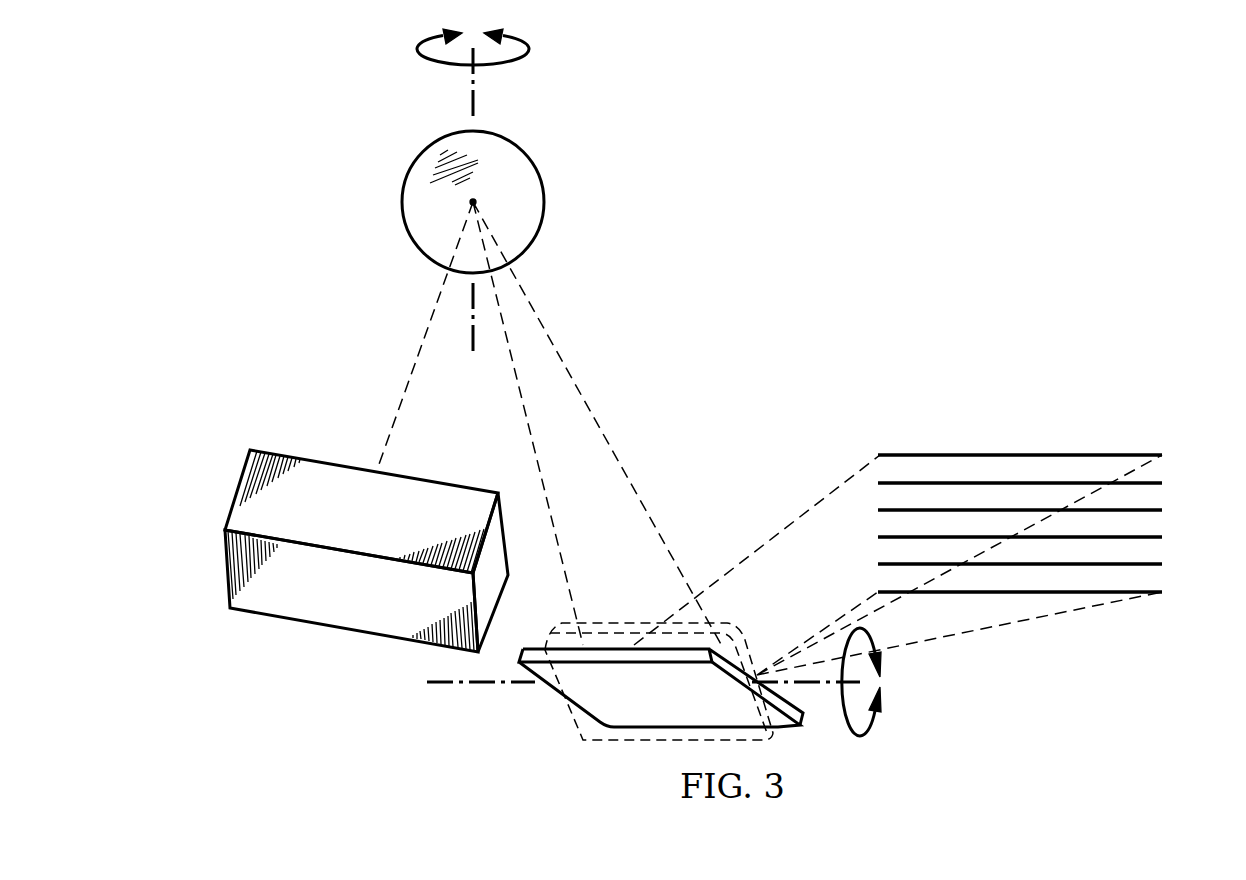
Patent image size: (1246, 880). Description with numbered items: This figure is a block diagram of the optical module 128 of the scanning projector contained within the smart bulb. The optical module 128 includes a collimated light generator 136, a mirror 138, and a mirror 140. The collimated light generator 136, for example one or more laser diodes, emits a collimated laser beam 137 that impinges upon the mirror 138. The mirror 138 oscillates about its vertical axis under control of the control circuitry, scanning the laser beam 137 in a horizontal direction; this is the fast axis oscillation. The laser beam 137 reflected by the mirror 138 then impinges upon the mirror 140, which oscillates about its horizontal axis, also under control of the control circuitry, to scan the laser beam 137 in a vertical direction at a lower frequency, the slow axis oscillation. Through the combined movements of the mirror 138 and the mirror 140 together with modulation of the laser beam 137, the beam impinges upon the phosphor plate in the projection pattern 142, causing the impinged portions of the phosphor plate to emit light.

The optical module 128 is at (843, 210).
The collimated light generator 136 is at (223, 570).
The laser beam 137 is at (422, 348).
The mirror 138 is at (402, 203).
The mirror 140 is at (643, 714).
The projection pattern 142 is at (1172, 455).